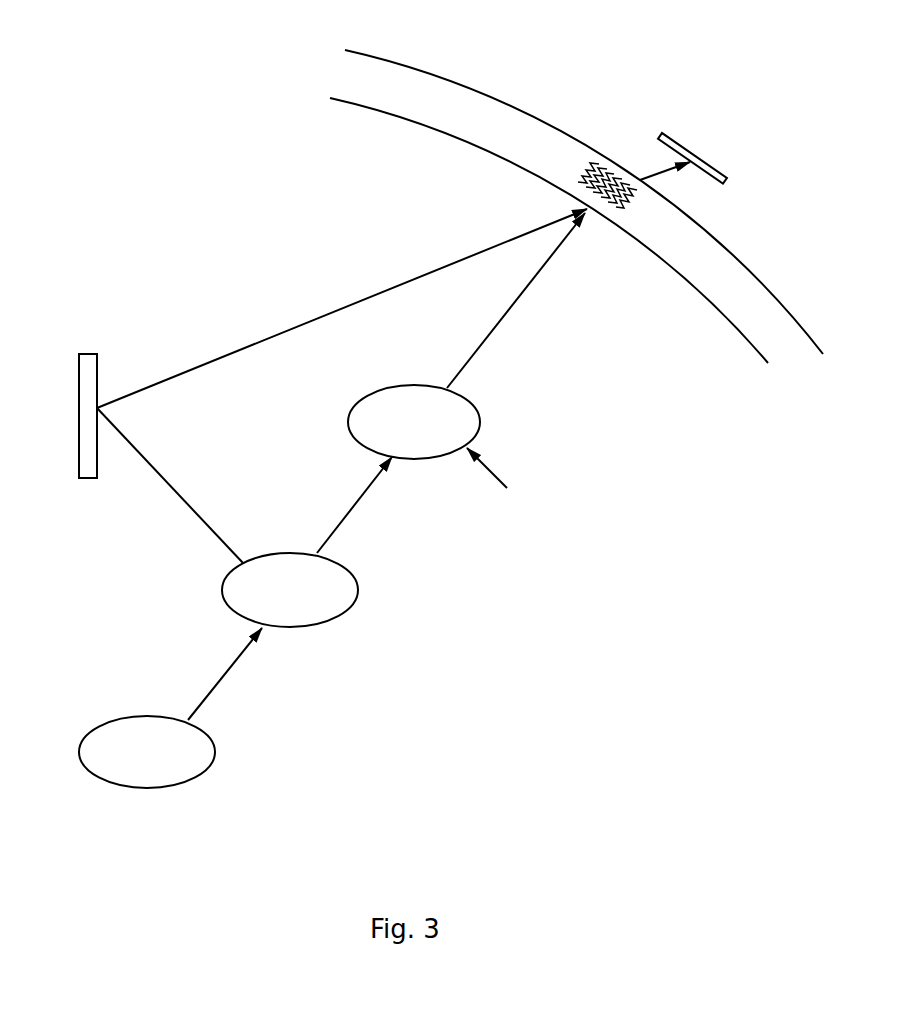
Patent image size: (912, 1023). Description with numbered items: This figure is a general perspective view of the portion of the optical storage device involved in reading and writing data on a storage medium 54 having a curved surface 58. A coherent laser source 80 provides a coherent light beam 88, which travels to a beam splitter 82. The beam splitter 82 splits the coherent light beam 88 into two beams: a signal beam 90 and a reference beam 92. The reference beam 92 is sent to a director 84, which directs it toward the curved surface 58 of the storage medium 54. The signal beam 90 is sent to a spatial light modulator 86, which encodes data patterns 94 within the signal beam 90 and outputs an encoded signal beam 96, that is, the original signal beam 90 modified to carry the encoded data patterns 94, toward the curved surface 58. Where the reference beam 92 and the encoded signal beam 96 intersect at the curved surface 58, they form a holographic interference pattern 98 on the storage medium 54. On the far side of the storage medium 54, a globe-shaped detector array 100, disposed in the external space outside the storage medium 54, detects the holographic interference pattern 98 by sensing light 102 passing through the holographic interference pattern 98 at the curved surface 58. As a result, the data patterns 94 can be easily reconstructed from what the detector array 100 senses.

The storage medium 54 is at (390, 62).
The curved surface 58 is at (530, 205).
The coherent laser source 80 is at (147, 752).
The beam splitter 82 is at (227, 517).
The director 84 is at (80, 352).
The spatial light modulator 86 is at (414, 422).
The coherent light beam 88 is at (217, 680).
The signal beam 90 is at (352, 505).
The reference beam 92 is at (310, 320).
The data patterns 94 is at (503, 475).
The encoded signal beam 96 is at (487, 337).
The holographic interference pattern 98 is at (583, 163).
The detector array 100 is at (717, 163).
The light 102 is at (660, 170).